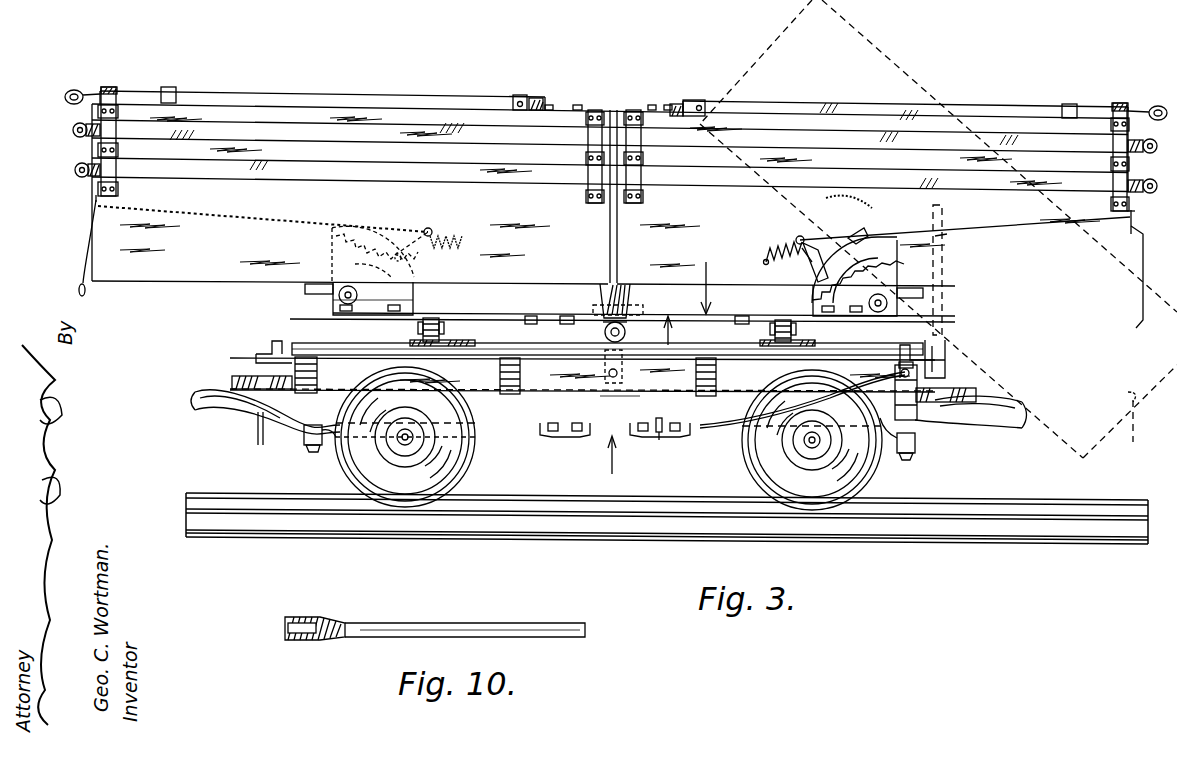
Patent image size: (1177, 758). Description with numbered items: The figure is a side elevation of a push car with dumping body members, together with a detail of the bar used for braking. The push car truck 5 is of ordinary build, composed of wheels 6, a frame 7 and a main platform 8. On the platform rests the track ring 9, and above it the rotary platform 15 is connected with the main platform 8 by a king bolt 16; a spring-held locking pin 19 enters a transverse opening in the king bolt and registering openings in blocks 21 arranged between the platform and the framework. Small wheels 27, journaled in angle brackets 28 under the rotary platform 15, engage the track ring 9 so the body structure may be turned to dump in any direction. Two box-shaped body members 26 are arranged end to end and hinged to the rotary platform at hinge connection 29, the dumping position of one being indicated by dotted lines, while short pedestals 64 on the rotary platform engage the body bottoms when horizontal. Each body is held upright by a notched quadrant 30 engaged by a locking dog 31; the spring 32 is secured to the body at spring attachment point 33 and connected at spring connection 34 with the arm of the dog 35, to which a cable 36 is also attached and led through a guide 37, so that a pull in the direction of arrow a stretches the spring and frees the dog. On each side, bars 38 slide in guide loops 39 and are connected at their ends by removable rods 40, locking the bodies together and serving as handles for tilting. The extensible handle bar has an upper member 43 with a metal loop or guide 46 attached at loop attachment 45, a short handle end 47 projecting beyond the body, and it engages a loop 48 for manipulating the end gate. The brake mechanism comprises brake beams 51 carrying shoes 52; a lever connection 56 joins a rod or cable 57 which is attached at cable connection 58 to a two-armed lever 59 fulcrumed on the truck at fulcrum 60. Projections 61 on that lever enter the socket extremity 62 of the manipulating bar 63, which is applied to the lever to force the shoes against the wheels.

In FIG. 3, the push car truck 5 is at (595, 455).
In FIG. 3, the wheels 6 is at (608, 413).
In FIG. 3, the frame 7 is at (500, 424).
In FIG. 3, the main platform 8 is at (332, 355).
In FIG. 3, the track ring 9 is at (515, 347).
In FIG. 3, the rotary platform 15 is at (500, 314).
In FIG. 3, the king bolt 16 is at (613, 380).
In FIG. 3, the locking pin 19 is at (606, 376).
In FIG. 3, the blocks 21 is at (630, 380).
In FIG. 3, the body members 26 is at (1000, 220).
In FIG. 3, the small wheels 27 is at (432, 326).
In FIG. 3, the angle brackets 28 is at (441, 333).
In FIG. 3, the hinge connection 29 is at (335, 305).
In FIG. 3, the notched quadrant 30 is at (408, 298).
In FIG. 3, the locking dog 31 is at (846, 236).
In FIG. 3, the spring 32 is at (780, 242).
In FIG. 3, the spring attachment point 33 is at (764, 262).
In FIG. 3, the spring connection 34 is at (798, 236).
In FIG. 3, the arm of the dog 35 is at (806, 262).
In FIG. 3, the cable 36 is at (86, 238).
In FIG. 3, the guide 37 is at (1128, 232).
In FIG. 3, the bars 38 is at (550, 125).
In FIG. 3, the guide loops 39 is at (110, 128).
In FIG. 3, the rods 40 is at (72, 131).
In FIG. 3, the upper member of handle bar 43 is at (300, 93).
In FIG. 3, the loop attachment 45 is at (520, 100).
In FIG. 3, the metal loop or guide 46 is at (172, 87).
In FIG. 3, the short handle end 47 is at (74, 90).
In FIG. 3, the loop 48 is at (110, 87).
In FIG. 3, the brake beams 51 is at (300, 440).
In FIG. 3, the shoes 52 is at (322, 448).
In FIG. 3, the lever connection 56 is at (660, 440).
In FIG. 3, the rod or cable 57 is at (722, 428).
In FIG. 3, the cable connection 58 is at (935, 425).
In FIG. 3, the lever 59 is at (256, 360).
In FIG. 3, the fulcrum 60 is at (910, 460).
In FIG. 3, the projections 61 is at (260, 355).
In FIG. 3, the pedestals 64 is at (630, 302).
In FIG. 3, the arrow a is at (985, 235).
In FIG. 10, the socket extremity 62 is at (300, 616).
In FIG. 10, the manipulating bar 63 is at (465, 618).